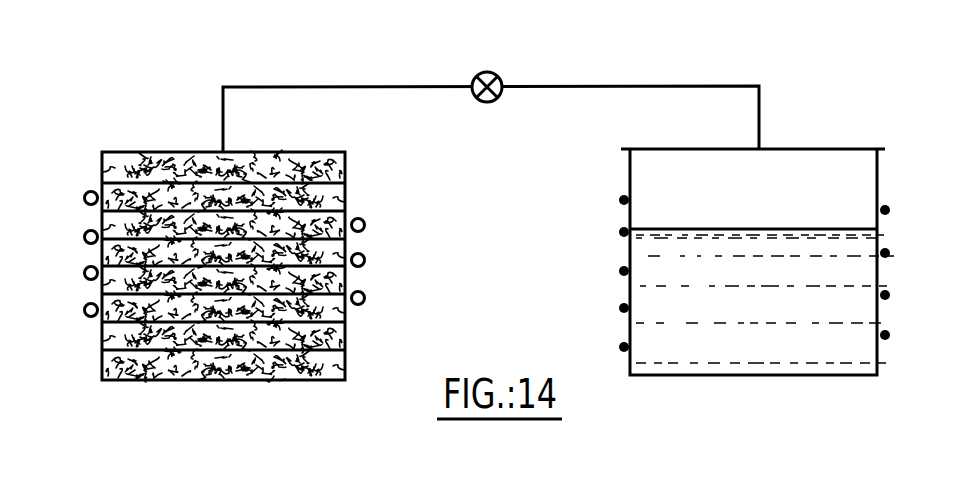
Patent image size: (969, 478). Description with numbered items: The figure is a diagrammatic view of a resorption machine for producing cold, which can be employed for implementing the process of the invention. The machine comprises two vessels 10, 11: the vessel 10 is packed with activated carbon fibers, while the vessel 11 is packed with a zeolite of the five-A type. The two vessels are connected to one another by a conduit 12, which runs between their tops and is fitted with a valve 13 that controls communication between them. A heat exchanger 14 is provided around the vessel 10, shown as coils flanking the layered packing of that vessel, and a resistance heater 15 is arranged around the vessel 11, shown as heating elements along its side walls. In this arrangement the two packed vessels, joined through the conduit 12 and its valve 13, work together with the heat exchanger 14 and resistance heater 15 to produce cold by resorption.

The vessel 10 is at (141, 150).
The vessel 11 is at (838, 148).
The conduit 12 is at (360, 85).
The valve 13 is at (492, 70).
The heat exchanger 14 is at (83, 196).
The resistance heater 15 is at (622, 200).